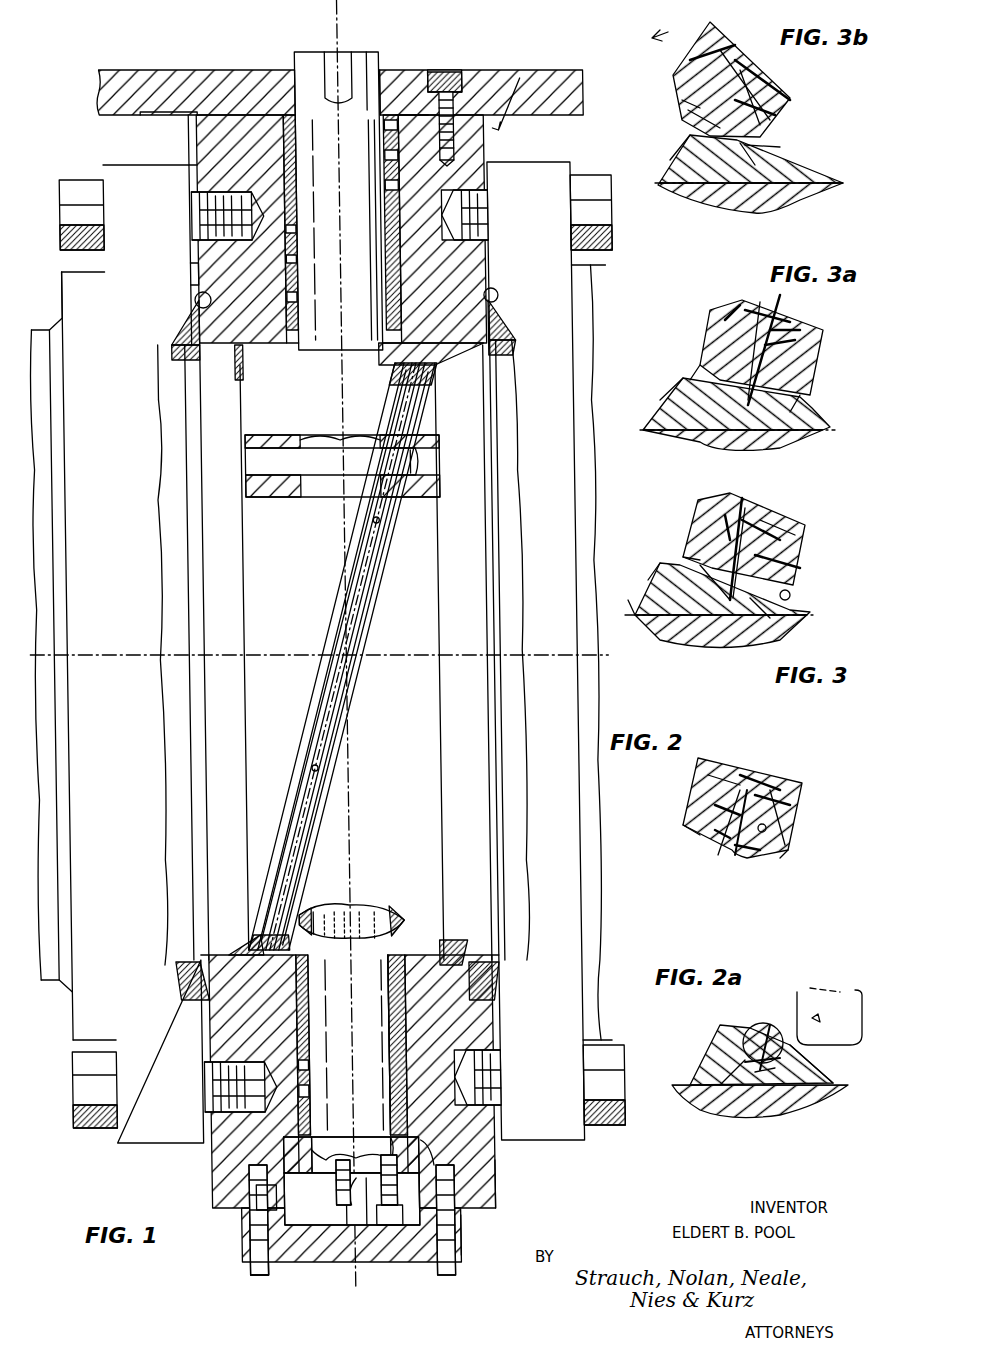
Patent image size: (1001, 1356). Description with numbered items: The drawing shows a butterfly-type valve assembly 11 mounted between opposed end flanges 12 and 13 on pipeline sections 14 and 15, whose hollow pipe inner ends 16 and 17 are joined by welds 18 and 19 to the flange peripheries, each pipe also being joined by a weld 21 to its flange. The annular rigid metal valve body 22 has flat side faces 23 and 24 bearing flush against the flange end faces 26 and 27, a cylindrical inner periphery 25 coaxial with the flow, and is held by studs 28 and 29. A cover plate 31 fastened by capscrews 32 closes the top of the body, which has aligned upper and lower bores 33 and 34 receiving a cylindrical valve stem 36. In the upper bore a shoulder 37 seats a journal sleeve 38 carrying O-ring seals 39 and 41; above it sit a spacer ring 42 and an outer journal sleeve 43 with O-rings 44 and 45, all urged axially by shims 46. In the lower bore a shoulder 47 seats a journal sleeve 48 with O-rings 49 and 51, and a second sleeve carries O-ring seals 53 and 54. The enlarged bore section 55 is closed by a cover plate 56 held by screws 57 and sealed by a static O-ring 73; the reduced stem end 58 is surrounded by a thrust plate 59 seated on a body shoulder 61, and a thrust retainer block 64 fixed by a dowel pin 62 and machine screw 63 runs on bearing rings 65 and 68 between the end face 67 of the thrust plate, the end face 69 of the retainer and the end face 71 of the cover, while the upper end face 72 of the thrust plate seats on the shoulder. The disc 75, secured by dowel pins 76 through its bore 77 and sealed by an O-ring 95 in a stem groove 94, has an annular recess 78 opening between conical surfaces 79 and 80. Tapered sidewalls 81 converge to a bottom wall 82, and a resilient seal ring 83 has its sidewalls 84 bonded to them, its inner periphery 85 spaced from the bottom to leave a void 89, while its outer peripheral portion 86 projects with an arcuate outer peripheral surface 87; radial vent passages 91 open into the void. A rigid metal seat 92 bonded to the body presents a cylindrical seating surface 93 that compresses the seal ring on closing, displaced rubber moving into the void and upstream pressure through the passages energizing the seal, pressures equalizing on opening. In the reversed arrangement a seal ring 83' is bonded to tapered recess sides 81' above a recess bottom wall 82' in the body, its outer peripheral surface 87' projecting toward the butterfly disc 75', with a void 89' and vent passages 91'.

In FIG. 1, the valve assembly 11 is at (513, 83).
In FIG. 1, the end flange 12 is at (137, 178).
In FIG. 1, the end flange 13 is at (540, 175).
In FIG. 1, the pipeline section 14 is at (41, 326).
In FIG. 1, the pipeline section 15 is at (584, 330).
In FIG. 1, the pipe inner end 16 is at (156, 372).
In FIG. 1, the pipe inner end 17 is at (508, 340).
In FIG. 1, the weld 18 is at (182, 350).
In FIG. 1, the weld 19 is at (498, 318).
In FIG. 1, the weld 21 is at (66, 460).
In FIG. 1, the valve body 22 is at (243, 112).
In FIG. 3B, the valve body 22 is at (790, 200).
In FIG. 3A, the valve body 22 is at (825, 432).
In FIG. 3, the valve body 22 is at (728, 645).
In FIG. 2A, the valve body 22 is at (825, 1095).
In FIG. 1, the side face 23 is at (195, 158).
In FIG. 1, the side face 24 is at (483, 170).
In FIG. 1, the inner periphery 25 is at (240, 352).
In FIG. 3, the inner periphery 25 is at (632, 612).
In FIG. 1, the end face 26 is at (195, 300).
In FIG. 1, the end face 27 is at (508, 290).
In FIG. 1, the stud 28 is at (58, 222).
In FIG. 1, the stud 29 is at (610, 215).
In FIG. 1, the cover plate 31 is at (412, 92).
In FIG. 1, the capscrew 32 is at (448, 72).
In FIG. 1, the upper bore 33 is at (400, 268).
In FIG. 1, the lower bore 34 is at (392, 1035).
In FIG. 1, the valve stem 36 is at (372, 60).
In FIG. 1, the annular shoulder 37 is at (296, 95).
In FIG. 1, the journal sleeve 38 is at (295, 259).
In FIG. 1, the O-ring seal 39 is at (295, 232).
In FIG. 1, the O-ring seal 41 is at (296, 298).
In FIG. 1, the spacer ring 42 is at (384, 184).
In FIG. 1, the outer journal sleeve 43 is at (398, 128).
In FIG. 1, the O-ring 44 is at (384, 155).
In FIG. 1, the O-ring 45 is at (290, 118).
In FIG. 1, the shims 46 is at (384, 80).
In FIG. 1, the shoulder 47 is at (413, 952).
In FIG. 1, the journal sleeve 48 is at (398, 1012).
In FIG. 1, the O-ring 49 is at (349, 1045).
In FIG. 1, the O-ring 51 is at (283, 1055).
In FIG. 1, the O-ring seal 53 is at (295, 1080).
In FIG. 1, the O-ring seal 54 is at (295, 1100).
In FIG. 1, the enlarged bore section 55 is at (405, 1190).
In FIG. 1, the cover plate 56 is at (405, 1268).
In FIG. 1, the screw 57 is at (429, 1275).
In FIG. 1, the reduced stem end 58 is at (333, 1160).
In FIG. 1, the thrust plate 59 is at (445, 1105).
In FIG. 1, the body shoulder 61 is at (318, 1150).
In FIG. 1, the dowel pin 62 is at (233, 1235).
In FIG. 1, the machine screw 63 is at (345, 1262).
In FIG. 1, the thrust retainer block 64 is at (480, 1192).
In FIG. 1, the bearing ring 65 is at (240, 1197).
In FIG. 1, the end face 67 is at (418, 1160).
In FIG. 1, the bearing ring 68 is at (290, 1262).
In FIG. 1, the end face 69 is at (445, 1228).
In FIG. 1, the end face 71 is at (322, 1205).
In FIG. 1, the upper end face 72 is at (386, 1128).
In FIG. 1, the O-ring 73 is at (258, 1280).
In FIG. 1, the disc 75 is at (347, 651).
In FIG. 3B, the disc 75 is at (750, 79).
In FIG. 3A, the disc 75 is at (775, 347).
In FIG. 3, the disc 75 is at (761, 539).
In FIG. 2, the disc 75 is at (742, 791).
In FIG. 1, the dowel pin 76 is at (240, 462).
In FIG. 1, the bore 77 is at (426, 505).
In FIG. 1, the annular recess 78 is at (344, 654).
In FIG. 3B, the annular recess 78 is at (772, 85).
In FIG. 3A, the annular recess 78 is at (812, 342).
In FIG. 3, the annular recess 78 is at (780, 535).
In FIG. 2, the annular recess 78 is at (770, 800).
In FIG. 1, the conical surface 79 is at (346, 688).
In FIG. 3B, the conical surface 79 is at (755, 163).
In FIG. 3A, the conical surface 79 is at (808, 407).
In FIG. 3, the conical surface 79 is at (790, 595).
In FIG. 2, the conical surface 79 is at (778, 855).
In FIG. 1, the conical surface 80 is at (244, 945).
In FIG. 3B, the conical surface 80 is at (680, 90).
In FIG. 3A, the conical surface 80 is at (690, 388).
In FIG. 3, the conical surface 80 is at (688, 560).
In FIG. 2, the conical surface 80 is at (683, 828).
In FIG. 2, the tapered sidewall 81 is at (792, 824).
In FIG. 3B, the bottom wall 82 is at (762, 62).
In FIG. 3A, the bottom wall 82 is at (813, 318).
In FIG. 3, the bottom wall 82 is at (782, 508).
In FIG. 2, the bottom wall 82 is at (766, 764).
In FIG. 1, the seal ring 83 is at (334, 655).
In FIG. 3B, the seal ring 83 is at (745, 69).
In FIG. 3A, the seal ring 83 is at (774, 344).
In FIG. 3, the seal ring 83 is at (760, 532).
In FIG. 2, the seal ring 83 is at (711, 837).
In FIG. 2, the sidewall 84 is at (715, 807).
In FIG. 3A, the inner periphery 85 is at (755, 318).
In FIG. 3, the inner periphery 85 is at (748, 520).
In FIG. 2, the inner periphery 85 is at (801, 813).
In FIG. 3B, the outer peripheral portion 86 is at (688, 112).
In FIG. 2, the outer peripheral portion 86 is at (715, 835).
In FIG. 3, the outer peripheral surface 87 is at (768, 608).
In FIG. 2, the outer peripheral surface 87 is at (751, 864).
In FIG. 3B, the void 89 is at (702, 42).
In FIG. 3A, the void 89 is at (715, 302).
In FIG. 3, the void 89 is at (726, 501).
In FIG. 2, the void 89 is at (697, 776).
In FIG. 1, the vent passage 91 is at (362, 644).
In FIG. 3B, the vent passage 91 is at (782, 97).
In FIG. 3A, the vent passage 91 is at (802, 351).
In FIG. 3, the vent passage 91 is at (785, 553).
In FIG. 2, the vent passage 91 is at (730, 837).
In FIG. 3B, the seat 92 is at (688, 160).
In FIG. 3A, the seat 92 is at (675, 400).
In FIG. 3, the seat 92 is at (660, 572).
In FIG. 2A, the seat 92 is at (705, 1058).
In FIG. 1, the seating surface 93 is at (263, 975).
In FIG. 3B, the seating surface 93 is at (775, 160).
In FIG. 3, the seating surface 93 is at (705, 575).
In FIG. 1, the annular groove 94 is at (318, 912).
In FIG. 1, the O-ring 95 is at (292, 912).
In FIG. 2A, the butterfly disc 75' is at (834, 1002).
In FIG. 2A, the tapered recess side 81' is at (828, 1064).
In FIG. 2A, the recess bottom wall 82' is at (744, 1103).
In FIG. 2A, the seal ring 83' is at (749, 1031).
In FIG. 2A, the outer peripheral surface 87' is at (773, 1022).
In FIG. 2A, the void 89' is at (710, 1096).
In FIG. 2A, the vent passage 91' is at (763, 1031).